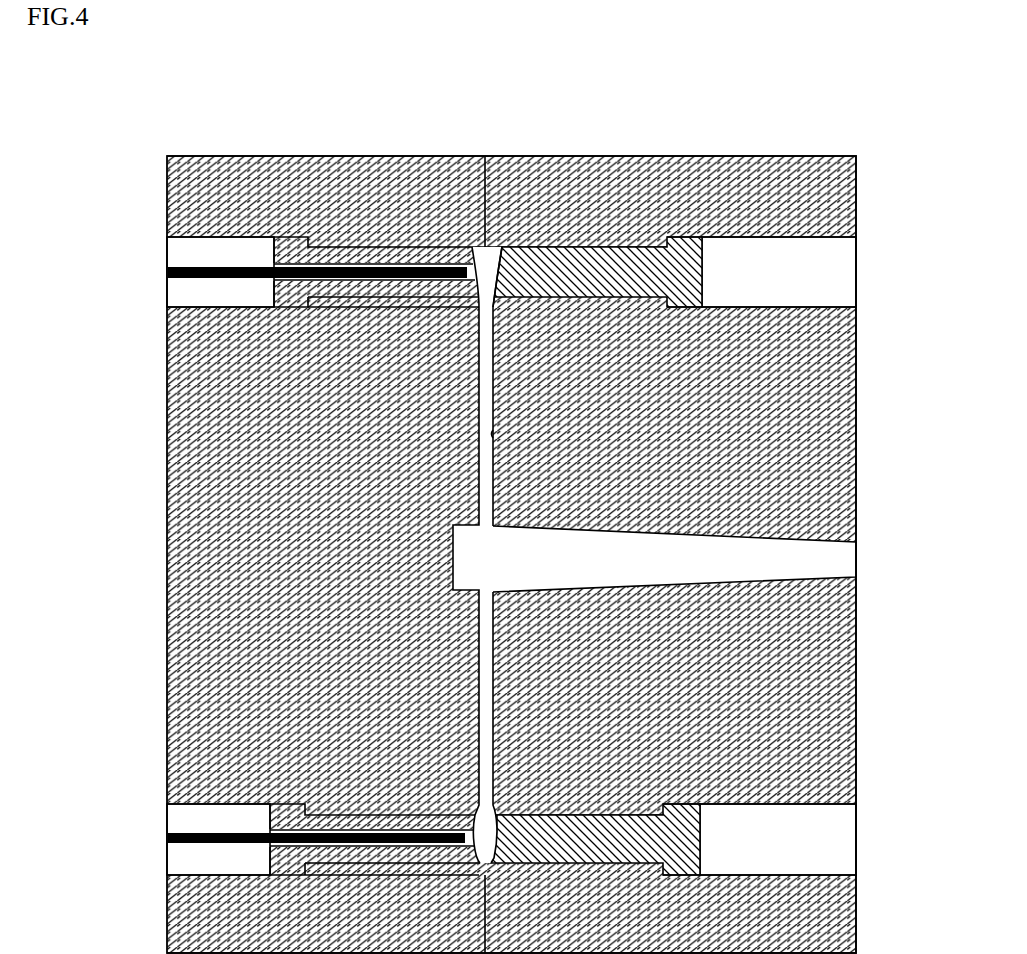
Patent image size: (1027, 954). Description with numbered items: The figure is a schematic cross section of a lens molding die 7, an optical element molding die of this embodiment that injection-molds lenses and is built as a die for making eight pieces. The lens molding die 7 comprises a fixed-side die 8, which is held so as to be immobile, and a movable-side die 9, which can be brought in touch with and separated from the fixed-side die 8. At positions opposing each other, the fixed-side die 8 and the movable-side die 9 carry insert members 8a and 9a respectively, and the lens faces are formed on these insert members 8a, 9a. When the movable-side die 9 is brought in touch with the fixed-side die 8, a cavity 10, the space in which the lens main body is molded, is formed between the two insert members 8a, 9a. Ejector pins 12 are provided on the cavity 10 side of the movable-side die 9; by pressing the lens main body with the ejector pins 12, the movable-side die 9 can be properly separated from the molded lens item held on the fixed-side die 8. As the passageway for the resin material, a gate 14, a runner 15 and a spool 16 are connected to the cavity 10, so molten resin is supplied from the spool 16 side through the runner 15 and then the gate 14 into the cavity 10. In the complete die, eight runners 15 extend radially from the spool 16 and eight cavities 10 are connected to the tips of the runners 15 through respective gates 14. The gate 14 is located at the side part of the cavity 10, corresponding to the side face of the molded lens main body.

The lens molding die 7 is at (100, 177).
The fixed-side die 8 is at (856, 385).
The insert member 8a is at (703, 263).
The movable-side die 9 is at (167, 437).
The insert member 9a is at (273, 253).
The cavity 10 is at (480, 247).
The ejector pins 12 is at (228, 277).
The gate 14 is at (500, 250).
The runner 15 is at (493, 433).
The spool 16 is at (825, 542).